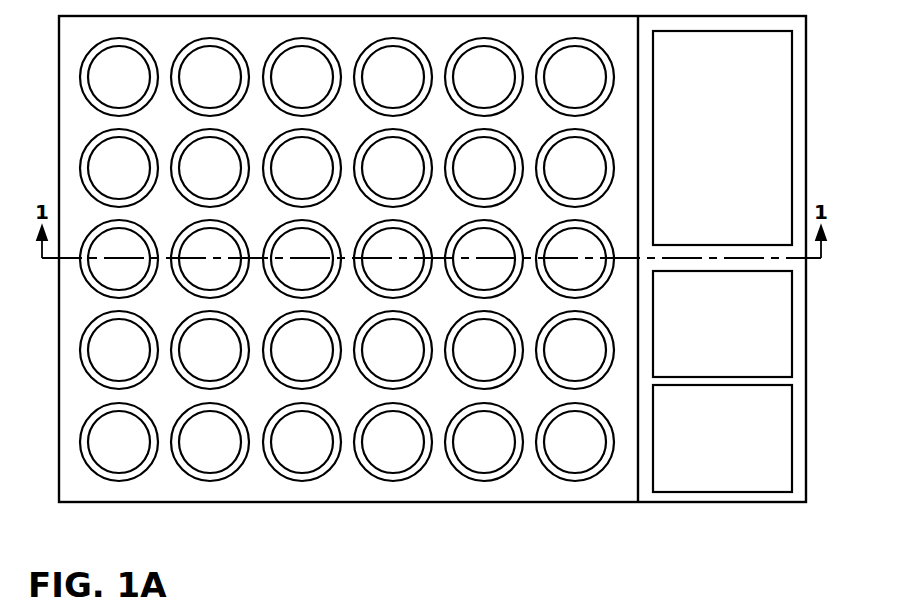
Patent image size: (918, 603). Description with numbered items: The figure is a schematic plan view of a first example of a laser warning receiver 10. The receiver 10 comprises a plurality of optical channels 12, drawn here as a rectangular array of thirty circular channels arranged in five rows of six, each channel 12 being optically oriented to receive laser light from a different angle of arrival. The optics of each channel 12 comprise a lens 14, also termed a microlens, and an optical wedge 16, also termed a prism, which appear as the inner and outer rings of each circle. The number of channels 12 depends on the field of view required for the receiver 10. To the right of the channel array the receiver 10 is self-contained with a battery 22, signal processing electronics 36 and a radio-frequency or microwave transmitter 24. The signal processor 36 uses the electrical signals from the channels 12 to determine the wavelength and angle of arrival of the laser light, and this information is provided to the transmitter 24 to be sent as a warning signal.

The laser warning receiver 10 is at (655, 522).
The optical channel 12 is at (347, 294).
The lens 14 is at (135, 414).
The optical wedge 16 is at (284, 412).
The battery 22 is at (710, 148).
The transmitter 24 is at (710, 448).
The signal processing electronics 36 is at (710, 334).